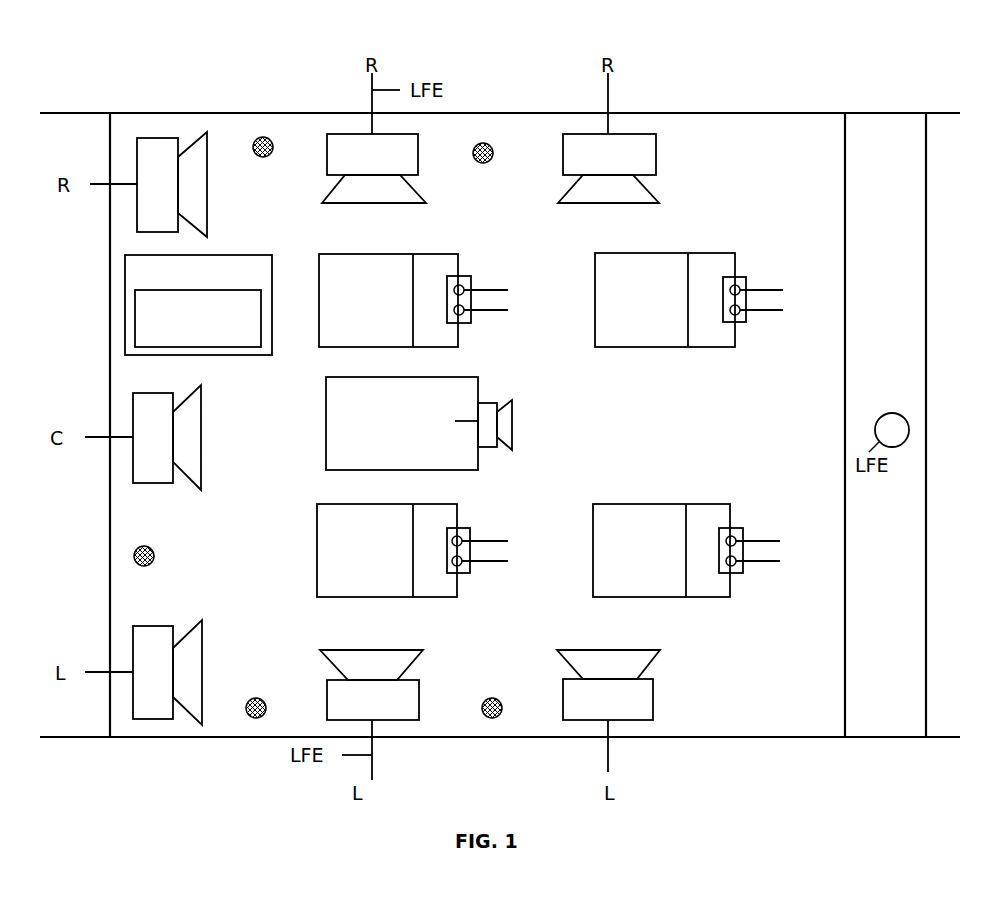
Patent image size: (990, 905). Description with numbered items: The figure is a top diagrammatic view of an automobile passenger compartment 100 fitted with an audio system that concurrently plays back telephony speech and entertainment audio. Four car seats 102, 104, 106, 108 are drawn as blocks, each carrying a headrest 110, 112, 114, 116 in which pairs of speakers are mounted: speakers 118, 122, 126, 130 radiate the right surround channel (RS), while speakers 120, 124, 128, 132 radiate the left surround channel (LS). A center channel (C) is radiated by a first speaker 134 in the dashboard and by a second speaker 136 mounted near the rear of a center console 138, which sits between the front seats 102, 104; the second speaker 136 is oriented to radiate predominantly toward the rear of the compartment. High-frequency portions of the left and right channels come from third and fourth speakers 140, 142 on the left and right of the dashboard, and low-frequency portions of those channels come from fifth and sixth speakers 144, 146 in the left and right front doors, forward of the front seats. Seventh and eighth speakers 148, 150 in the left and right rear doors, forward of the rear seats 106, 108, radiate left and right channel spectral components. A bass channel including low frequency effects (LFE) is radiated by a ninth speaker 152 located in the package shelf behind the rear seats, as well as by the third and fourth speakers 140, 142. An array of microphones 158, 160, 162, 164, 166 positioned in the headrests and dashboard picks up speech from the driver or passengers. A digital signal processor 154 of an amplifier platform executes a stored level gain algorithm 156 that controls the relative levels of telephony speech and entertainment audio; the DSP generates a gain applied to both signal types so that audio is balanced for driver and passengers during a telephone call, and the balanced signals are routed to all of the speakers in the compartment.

The passenger compartment 100 is at (800, 55).
The car seat 102 is at (369, 282).
The car seat 104 is at (369, 529).
The car seat 106 is at (643, 282).
The car seat 108 is at (641, 529).
The headrest 110 is at (481, 275).
The headrest 112 is at (481, 525).
The headrest 114 is at (756, 275).
The headrest 116 is at (753, 525).
The speaker 118 is at (447, 290).
The speaker 120 is at (447, 310).
The speaker 122 is at (447, 541).
The speaker 124 is at (447, 561).
The speaker 126 is at (723, 290).
The speaker 128 is at (723, 310).
The speaker 130 is at (719, 541).
The speaker 132 is at (719, 561).
The first speaker 134 is at (223, 430).
The second speaker 136 is at (513, 412).
The center console 138 is at (374, 407).
The third speaker 140 is at (208, 212).
The fourth speaker 142 is at (203, 648).
The fifth speaker 144 is at (397, 203).
The sixth speaker 146 is at (350, 650).
The seventh speaker 148 is at (586, 650).
The eighth speaker 150 is at (632, 203).
The ninth speaker 152 is at (912, 406).
The digital signal processor 154 is at (238, 282).
The level gain algorithm 156 is at (243, 344).
The microphone 158 is at (512, 140).
The microphone 160 is at (292, 137).
The microphone 162 is at (168, 533).
The microphone 164 is at (279, 691).
The microphone 166 is at (503, 706).